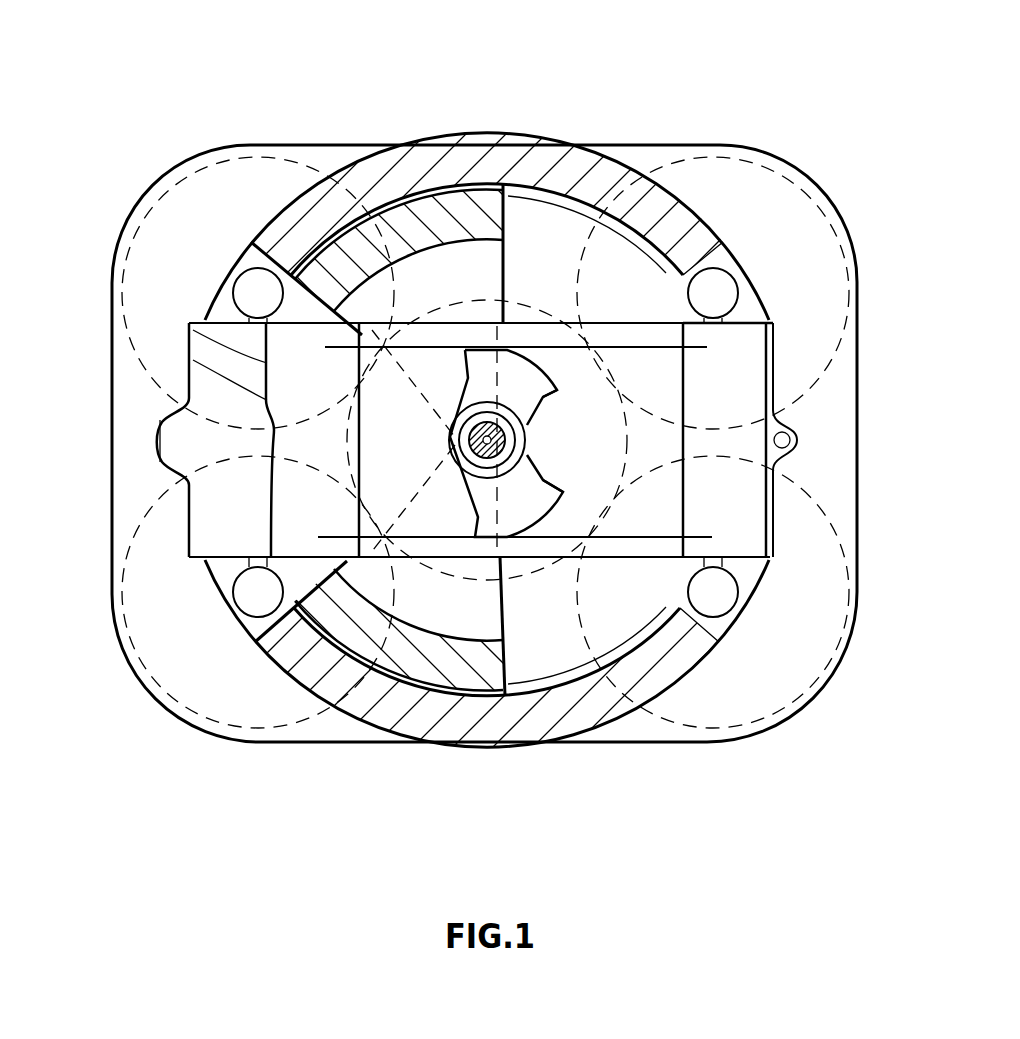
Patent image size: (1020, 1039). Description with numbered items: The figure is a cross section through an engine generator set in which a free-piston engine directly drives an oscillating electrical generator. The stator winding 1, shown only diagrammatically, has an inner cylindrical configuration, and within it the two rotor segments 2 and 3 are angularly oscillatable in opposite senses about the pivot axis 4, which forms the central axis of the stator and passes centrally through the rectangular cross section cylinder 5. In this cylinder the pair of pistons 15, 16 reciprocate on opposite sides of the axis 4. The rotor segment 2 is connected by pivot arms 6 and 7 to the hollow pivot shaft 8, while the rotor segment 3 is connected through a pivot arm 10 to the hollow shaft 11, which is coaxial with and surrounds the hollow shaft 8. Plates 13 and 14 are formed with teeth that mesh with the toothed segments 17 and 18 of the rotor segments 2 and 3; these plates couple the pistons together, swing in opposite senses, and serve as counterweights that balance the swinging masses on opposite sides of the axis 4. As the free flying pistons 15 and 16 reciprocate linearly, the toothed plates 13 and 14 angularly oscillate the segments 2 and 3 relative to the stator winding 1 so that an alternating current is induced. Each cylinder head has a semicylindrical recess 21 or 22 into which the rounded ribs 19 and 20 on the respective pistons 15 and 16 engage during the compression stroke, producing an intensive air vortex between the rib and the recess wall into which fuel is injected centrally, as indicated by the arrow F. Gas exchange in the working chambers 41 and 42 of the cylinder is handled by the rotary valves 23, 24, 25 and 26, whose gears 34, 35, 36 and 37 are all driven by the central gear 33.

The stator winding 1 is at (352, 172).
The rotor segment 2 is at (363, 620).
The rotor segment 3 is at (398, 217).
The pivot axis 4 is at (478, 423).
The rectangular cross section cylinder 5 is at (518, 323).
The pivot arm 6 is at (503, 193).
The pivot arm 7 is at (440, 605).
The hollow pivot shaft 8 is at (460, 430).
The pivot arm 10 is at (333, 240).
The hollow shaft 11 is at (450, 463).
The toothed plate 13 is at (610, 333).
The toothed plate 14 is at (640, 537).
The piston 15 is at (193, 330).
The piston 16 is at (773, 360).
The toothed segment 17 is at (552, 393).
The toothed segment 18 is at (543, 460).
The rounded rib 19 is at (193, 360).
The rounded rib 20 is at (778, 475).
The semicylindrical recess 21 is at (158, 455).
The semicylindrical recess 22 is at (797, 450).
The rotary valve 23 is at (255, 597).
The rotary valve 24 is at (715, 600).
The rotary valve 25 is at (240, 257).
The rotary valve 26 is at (715, 285).
The central gear 33 is at (587, 639).
The rotary valve gear 34 is at (175, 183).
The rotary valve gear 35 is at (792, 183).
The rotary valve gear 36 is at (140, 652).
The rotary valve gear 37 is at (760, 718).
The working chamber 41 is at (745, 340).
The working chamber 42 is at (195, 540).